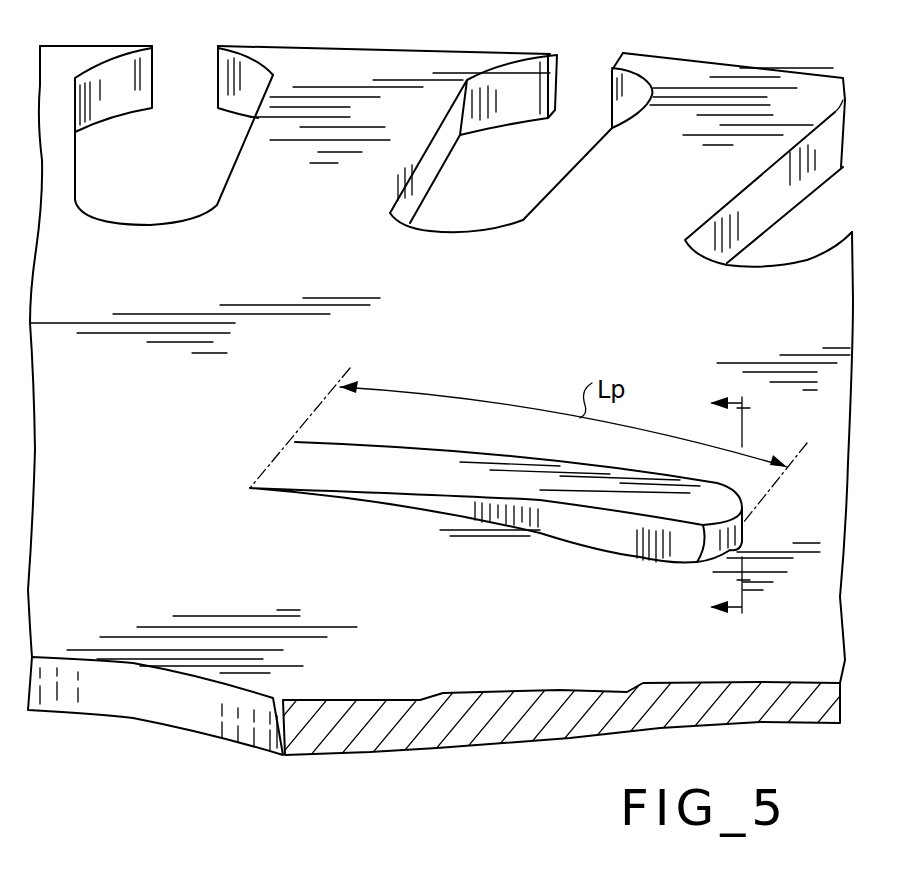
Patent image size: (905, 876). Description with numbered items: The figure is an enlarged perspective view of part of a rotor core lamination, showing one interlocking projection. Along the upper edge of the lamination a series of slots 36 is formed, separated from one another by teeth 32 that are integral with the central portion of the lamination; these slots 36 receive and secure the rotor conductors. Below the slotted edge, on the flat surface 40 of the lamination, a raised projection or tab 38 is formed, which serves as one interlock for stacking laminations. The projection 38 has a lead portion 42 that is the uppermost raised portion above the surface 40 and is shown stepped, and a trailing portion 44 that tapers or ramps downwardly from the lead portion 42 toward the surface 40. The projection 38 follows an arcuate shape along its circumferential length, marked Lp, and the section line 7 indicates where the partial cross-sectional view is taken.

The teeth 32 is at (366, 64).
The slots 36 is at (120, 127).
The projection 38 is at (534, 500).
The surface of the lamination 40 is at (157, 399).
The lead portion 42 is at (700, 527).
The trailing portion 44 is at (397, 468).
The section line 7- 7 is at (721, 507).